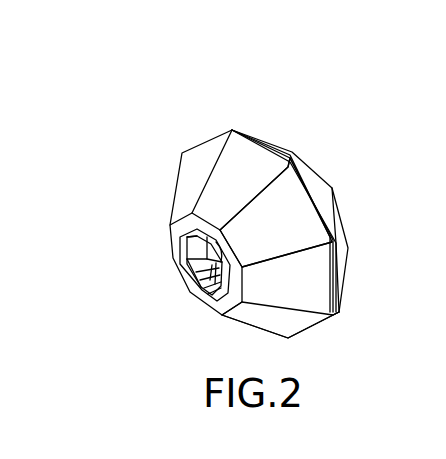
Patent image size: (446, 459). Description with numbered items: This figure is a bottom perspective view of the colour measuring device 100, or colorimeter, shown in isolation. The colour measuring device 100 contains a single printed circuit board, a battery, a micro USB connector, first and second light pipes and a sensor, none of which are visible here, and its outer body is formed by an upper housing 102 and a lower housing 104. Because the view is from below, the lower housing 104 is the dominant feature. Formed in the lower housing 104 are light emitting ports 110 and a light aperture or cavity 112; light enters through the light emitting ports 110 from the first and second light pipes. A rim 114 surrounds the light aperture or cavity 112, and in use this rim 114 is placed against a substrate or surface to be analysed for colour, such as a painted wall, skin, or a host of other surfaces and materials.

The colour measuring device 100 is at (180, 128).
The upper housing 102 is at (322, 195).
The lower housing 104 is at (290, 323).
The light emitting ports 110 is at (203, 287).
The light aperture or cavity 112 is at (196, 243).
The rim 114 is at (212, 303).